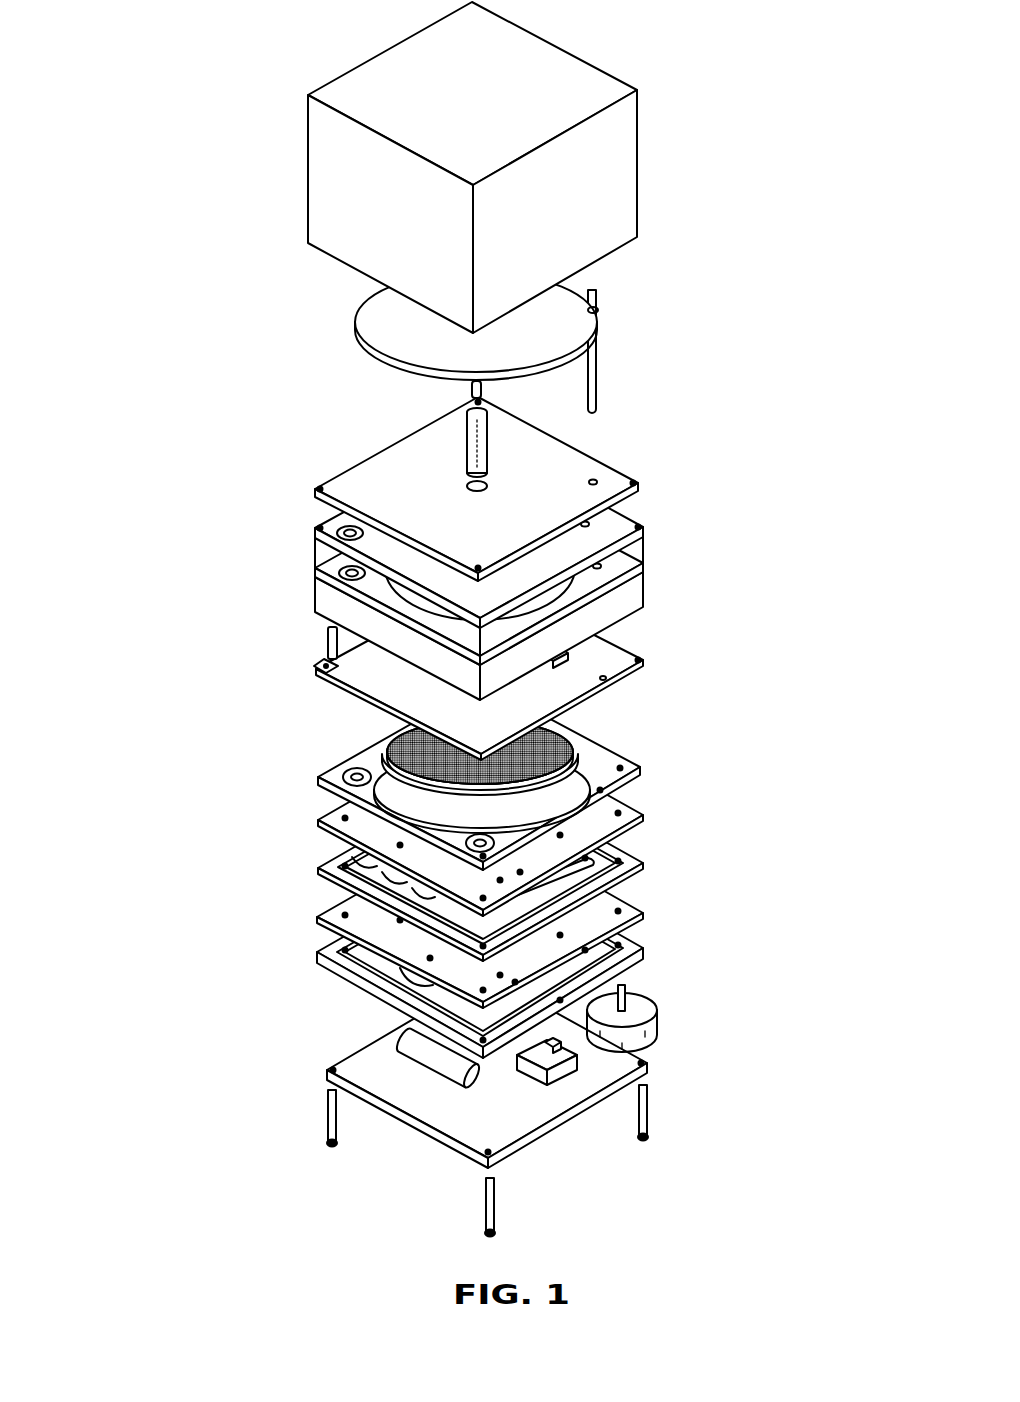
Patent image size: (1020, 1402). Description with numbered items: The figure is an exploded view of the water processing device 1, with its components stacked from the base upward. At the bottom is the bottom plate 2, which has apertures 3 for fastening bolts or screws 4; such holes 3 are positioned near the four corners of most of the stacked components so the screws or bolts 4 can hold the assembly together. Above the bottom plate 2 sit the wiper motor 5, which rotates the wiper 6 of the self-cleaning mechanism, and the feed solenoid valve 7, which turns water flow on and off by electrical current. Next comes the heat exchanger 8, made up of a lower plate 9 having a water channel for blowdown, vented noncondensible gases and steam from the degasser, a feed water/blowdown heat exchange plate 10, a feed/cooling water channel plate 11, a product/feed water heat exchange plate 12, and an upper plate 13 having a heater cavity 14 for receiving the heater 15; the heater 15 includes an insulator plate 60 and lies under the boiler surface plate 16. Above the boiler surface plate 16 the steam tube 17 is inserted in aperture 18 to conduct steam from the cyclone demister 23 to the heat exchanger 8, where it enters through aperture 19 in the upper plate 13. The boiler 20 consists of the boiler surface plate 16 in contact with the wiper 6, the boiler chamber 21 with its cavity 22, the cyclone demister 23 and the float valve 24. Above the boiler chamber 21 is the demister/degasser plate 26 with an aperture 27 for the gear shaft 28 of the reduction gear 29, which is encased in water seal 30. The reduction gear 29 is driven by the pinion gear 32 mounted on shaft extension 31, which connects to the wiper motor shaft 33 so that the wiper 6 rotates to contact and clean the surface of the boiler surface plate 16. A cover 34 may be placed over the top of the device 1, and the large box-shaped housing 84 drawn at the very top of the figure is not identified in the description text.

The water processing device 1 is at (166, 290).
The bottom plate 2 is at (645, 1068).
The apertures 3 is at (327, 1070).
The fastening bolts or screws 4 is at (646, 1113).
The wiper motor 5 is at (656, 1030).
The wiper 6 is at (603, 642).
The feed solenoid valve 7 is at (400, 1042).
The heat exchanger 8 is at (320, 773).
The lower plate 9 is at (645, 962).
The feed water/blowdown heat exchange plate 10 is at (645, 914).
The feed/cooling water channel plate 11 is at (645, 864).
The product/feed water heat exchange plate 12 is at (641, 818).
The upper plate 13 is at (623, 778).
The heater cavity 14 is at (638, 768).
The heater 15 is at (580, 722).
The boiler surface plate 16 is at (643, 667).
The steam tube 17 is at (330, 635).
The aperture 18 is at (333, 663).
The aperture 19 is at (357, 772).
The boiler 20 is at (623, 598).
The boiler chamber 21 is at (644, 560).
The cavity 22 is at (645, 546).
The cyclone demister 23 is at (316, 552).
The float valve 24 is at (316, 594).
The demister/degasser plate 26 is at (640, 485).
The aperture 27 is at (487, 483).
The gear shaft 28 is at (470, 388).
The reduction gear 29 is at (576, 304).
The water seal 30 is at (486, 428).
The shaft extension 31 is at (598, 372).
The pinion gear 32 is at (598, 315).
The wiper motor shaft 33 is at (626, 990).
The cover 34 is at (576, 1068).
The insulator plate 60 is at (578, 744).
The housing 84 is at (617, 155).